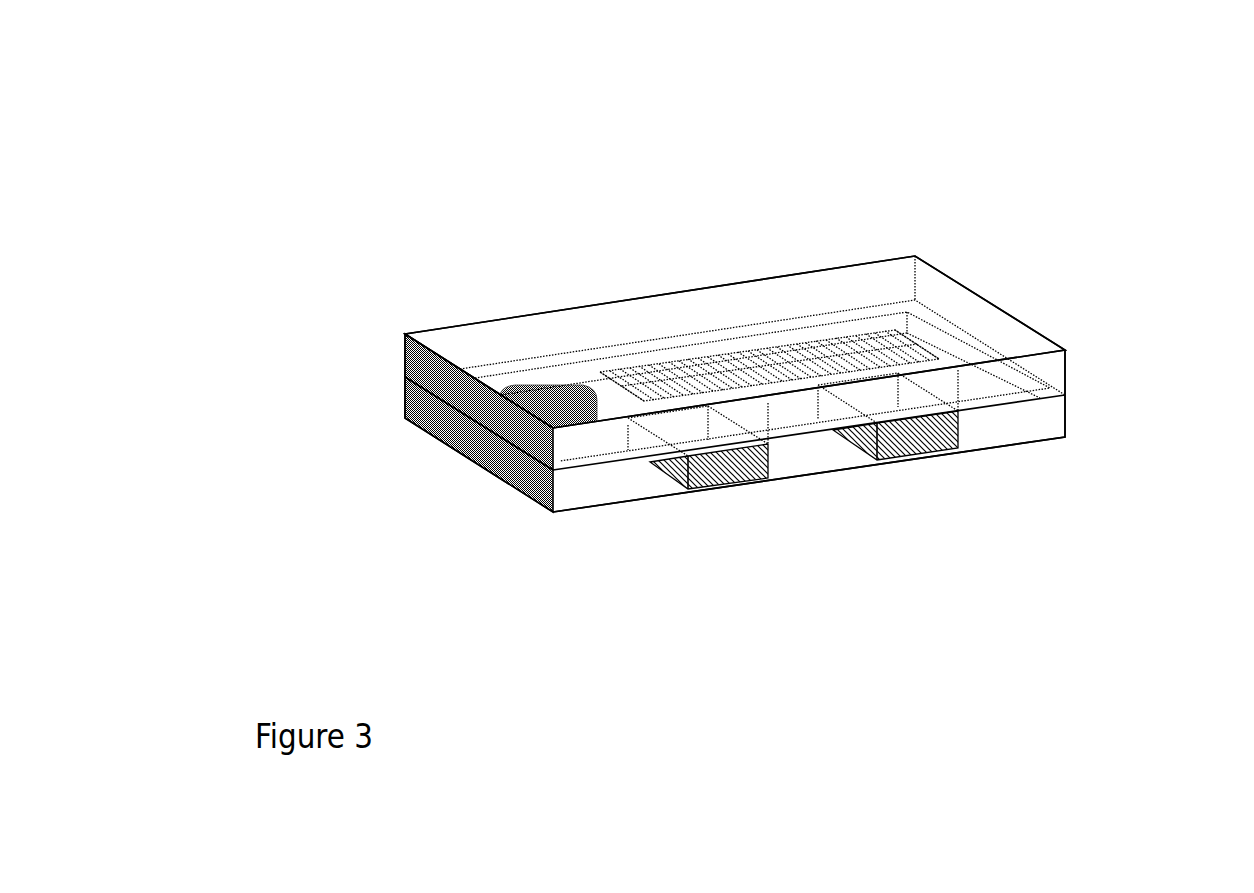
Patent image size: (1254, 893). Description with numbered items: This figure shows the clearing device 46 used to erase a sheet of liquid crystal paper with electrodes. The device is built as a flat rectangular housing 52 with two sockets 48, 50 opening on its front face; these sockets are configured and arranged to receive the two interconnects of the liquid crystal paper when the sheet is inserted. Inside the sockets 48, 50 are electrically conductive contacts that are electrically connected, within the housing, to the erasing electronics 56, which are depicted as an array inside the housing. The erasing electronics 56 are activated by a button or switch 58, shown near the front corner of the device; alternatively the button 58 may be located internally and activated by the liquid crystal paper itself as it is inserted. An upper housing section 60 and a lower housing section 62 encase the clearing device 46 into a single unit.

The clearing device 46 is at (1210, 111).
The socket 48 is at (736, 487).
The socket 50 is at (922, 458).
The housing 52 is at (990, 331).
The erasing electronics 56 is at (840, 358).
The button 58 is at (551, 383).
The upper housing section 60 is at (403, 352).
The lower housing section 62 is at (455, 453).